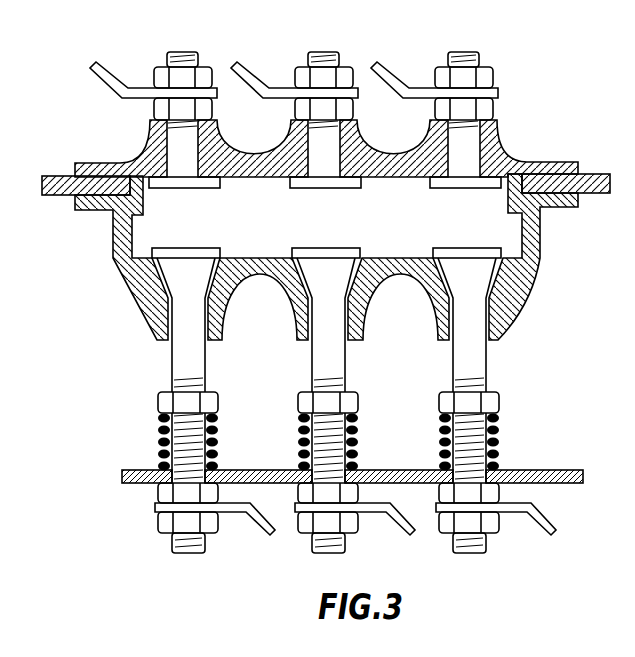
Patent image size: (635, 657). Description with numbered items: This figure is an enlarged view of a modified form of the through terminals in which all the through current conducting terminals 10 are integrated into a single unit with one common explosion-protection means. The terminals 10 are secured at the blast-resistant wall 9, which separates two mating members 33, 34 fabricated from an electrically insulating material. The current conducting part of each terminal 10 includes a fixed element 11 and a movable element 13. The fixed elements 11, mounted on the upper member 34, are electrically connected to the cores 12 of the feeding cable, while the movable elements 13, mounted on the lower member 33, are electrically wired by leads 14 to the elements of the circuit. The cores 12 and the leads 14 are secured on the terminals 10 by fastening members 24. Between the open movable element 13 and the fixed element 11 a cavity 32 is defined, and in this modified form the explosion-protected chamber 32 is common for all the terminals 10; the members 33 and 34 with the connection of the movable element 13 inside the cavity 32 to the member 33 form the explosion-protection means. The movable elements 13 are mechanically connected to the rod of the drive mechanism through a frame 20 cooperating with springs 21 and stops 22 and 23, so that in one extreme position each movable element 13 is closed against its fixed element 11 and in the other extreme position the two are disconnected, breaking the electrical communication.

The blast-resistant wall 9 is at (594, 175).
The through current conducting terminal 10 is at (128, 141).
The element of the current conducting part 11 is at (178, 56).
The core of the feeding cable 12 is at (114, 82).
The movable element of the current conducting part 13 is at (183, 357).
The lead 14 is at (552, 518).
The frame 20 is at (561, 469).
The spring 21 is at (499, 430).
The stop 22 is at (492, 396).
The stop 23 is at (160, 493).
The fastening member 24 is at (492, 73).
The cavity 32 is at (506, 232).
The member of insulating material 33 is at (507, 301).
The member of insulating material 34 is at (510, 137).